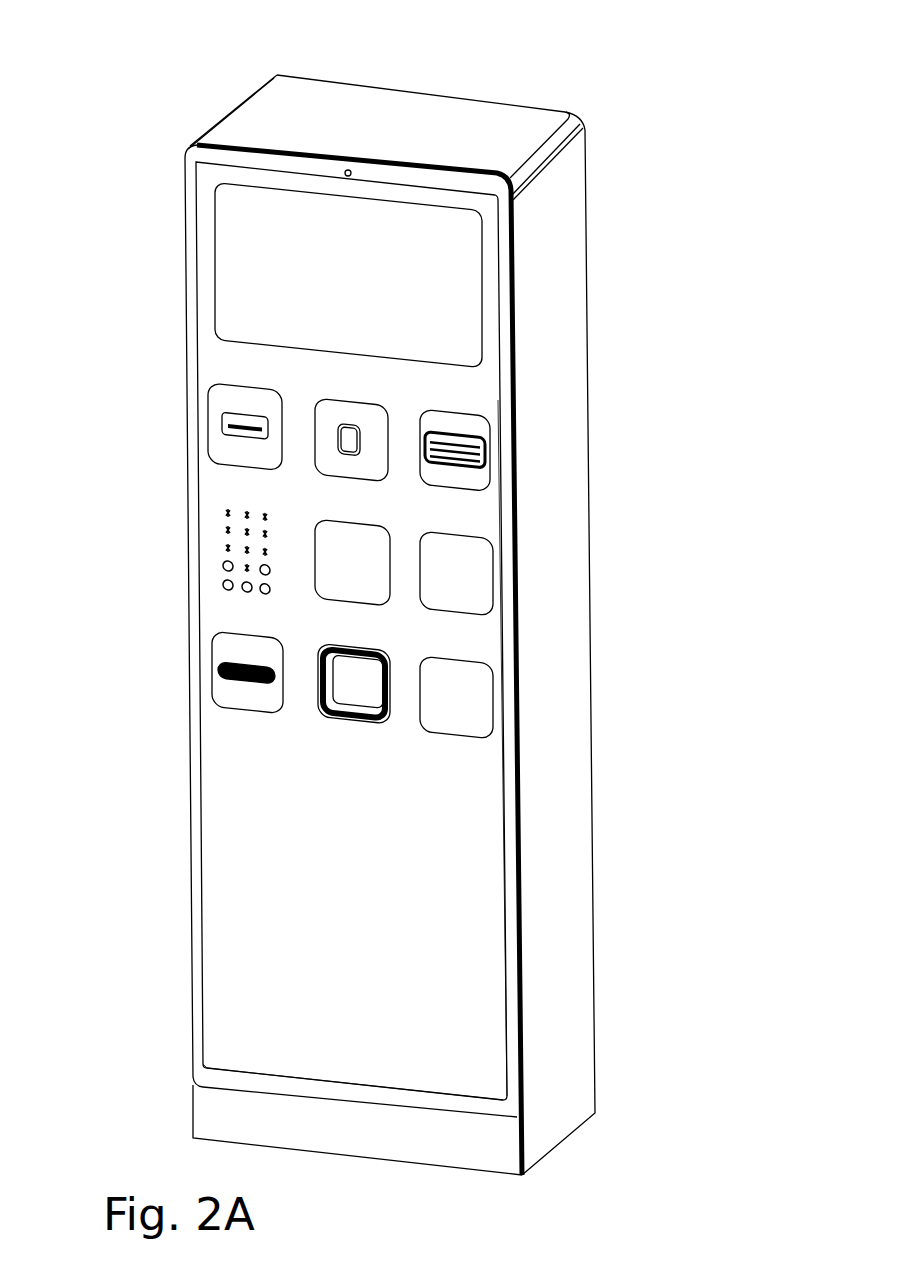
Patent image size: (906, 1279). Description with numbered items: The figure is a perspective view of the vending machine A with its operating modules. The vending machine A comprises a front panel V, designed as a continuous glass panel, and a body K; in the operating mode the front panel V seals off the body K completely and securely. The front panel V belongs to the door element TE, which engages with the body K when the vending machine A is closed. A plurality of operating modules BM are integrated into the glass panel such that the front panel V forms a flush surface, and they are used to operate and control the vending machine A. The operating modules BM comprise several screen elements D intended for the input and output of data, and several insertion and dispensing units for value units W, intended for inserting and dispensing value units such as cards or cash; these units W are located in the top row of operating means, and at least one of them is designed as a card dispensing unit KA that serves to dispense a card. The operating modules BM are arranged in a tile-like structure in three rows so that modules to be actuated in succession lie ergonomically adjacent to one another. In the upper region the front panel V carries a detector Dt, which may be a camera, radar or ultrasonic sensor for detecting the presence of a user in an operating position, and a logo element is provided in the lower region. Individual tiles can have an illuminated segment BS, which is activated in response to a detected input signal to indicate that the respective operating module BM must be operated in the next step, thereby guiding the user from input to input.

The vending machine A is at (605, 133).
The body K is at (313, 100).
The door element TE is at (212, 172).
The detector Dt is at (351, 170).
The screen element D is at (455, 313).
The insertion and dispensing unit for value units W is at (323, 405).
The illuminated segment BS is at (485, 480).
The operating module BM is at (230, 553).
The card dispensing unit KA is at (360, 695).
The front panel V is at (232, 970).